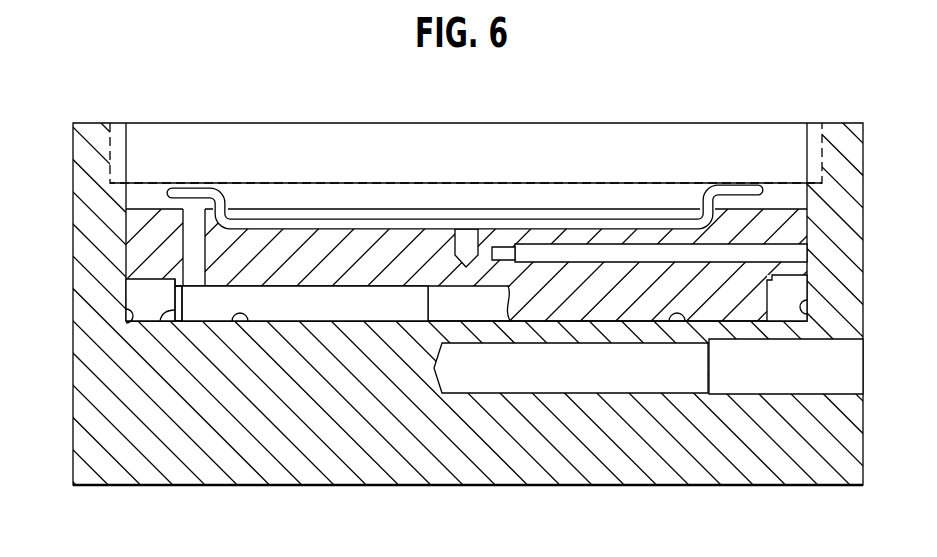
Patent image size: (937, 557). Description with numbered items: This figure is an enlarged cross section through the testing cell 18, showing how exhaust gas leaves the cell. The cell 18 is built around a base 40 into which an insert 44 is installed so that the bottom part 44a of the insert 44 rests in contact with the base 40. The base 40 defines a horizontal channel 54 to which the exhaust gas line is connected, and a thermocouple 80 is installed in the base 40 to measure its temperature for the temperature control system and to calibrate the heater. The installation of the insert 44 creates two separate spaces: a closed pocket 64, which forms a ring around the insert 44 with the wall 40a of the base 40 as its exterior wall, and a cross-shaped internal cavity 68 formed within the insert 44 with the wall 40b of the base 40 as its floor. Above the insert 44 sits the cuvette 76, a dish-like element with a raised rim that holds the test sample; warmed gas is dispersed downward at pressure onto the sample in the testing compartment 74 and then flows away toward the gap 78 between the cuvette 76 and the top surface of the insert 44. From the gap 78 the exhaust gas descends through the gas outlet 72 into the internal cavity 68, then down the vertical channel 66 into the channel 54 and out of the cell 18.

The cell 18 is at (750, 123).
The base 40 is at (347, 482).
The wall 40a is at (138, 328).
The wall 40b is at (240, 322).
The insert 44 is at (798, 223).
The bottom part 44a is at (170, 313).
The channel 54 is at (607, 383).
The closed pocket 64 is at (140, 293).
The vertical channel 66 is at (476, 333).
The internal cavity 68 is at (305, 307).
The gas outlet 72 is at (188, 243).
The testing compartment 74 is at (270, 137).
The cuvette 76 is at (716, 185).
The gap 78 is at (177, 204).
The thermocouple 80 is at (798, 253).